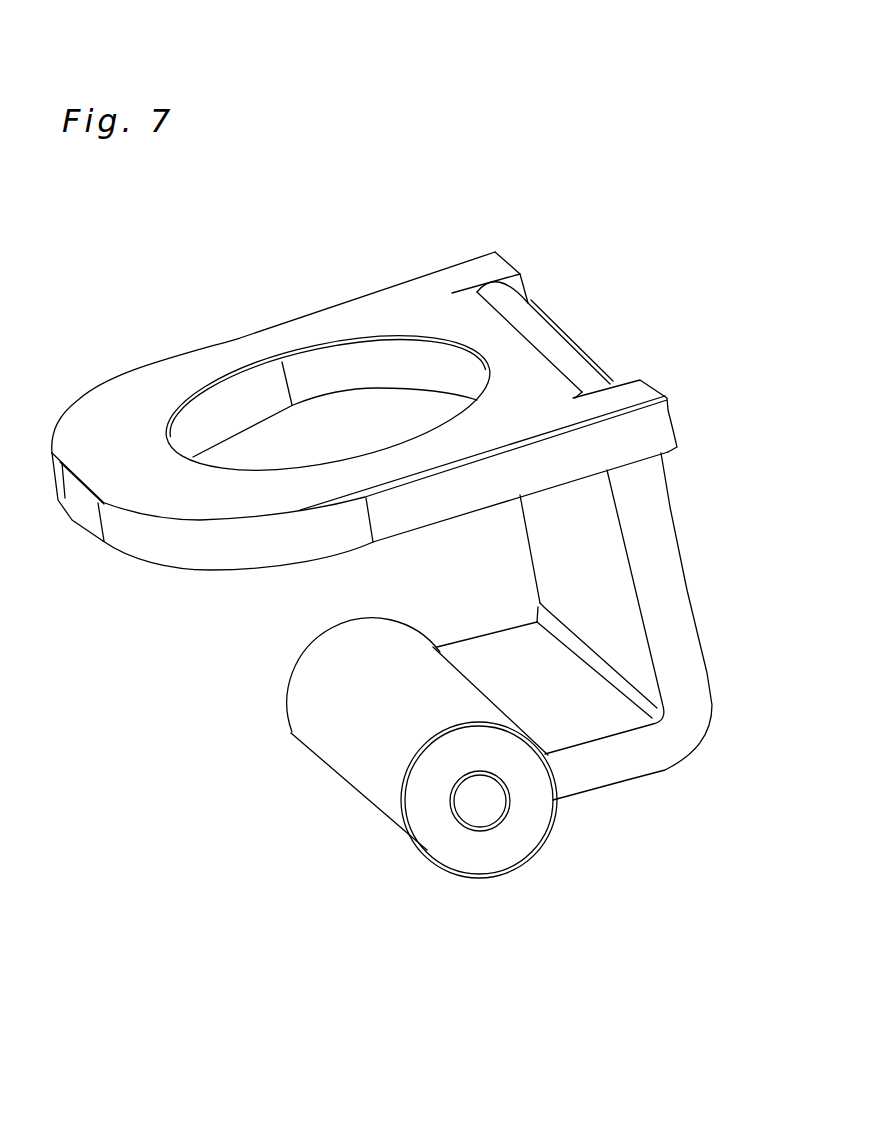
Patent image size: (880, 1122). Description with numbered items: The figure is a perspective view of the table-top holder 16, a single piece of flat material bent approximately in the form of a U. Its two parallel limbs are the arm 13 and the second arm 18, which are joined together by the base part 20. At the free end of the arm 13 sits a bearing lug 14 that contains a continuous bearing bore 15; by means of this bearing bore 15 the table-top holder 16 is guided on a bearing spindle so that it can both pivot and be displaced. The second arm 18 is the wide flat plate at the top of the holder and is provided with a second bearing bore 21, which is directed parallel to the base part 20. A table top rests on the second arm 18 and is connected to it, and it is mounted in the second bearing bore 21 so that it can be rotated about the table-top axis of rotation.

The arm 13 is at (595, 715).
The bearing lug 14 is at (458, 855).
The bearing bore 15 is at (481, 802).
The table-top holder 16 is at (412, 132).
The second arm 18 is at (315, 327).
The base part 20 is at (653, 569).
The second bearing bore 21 is at (280, 440).